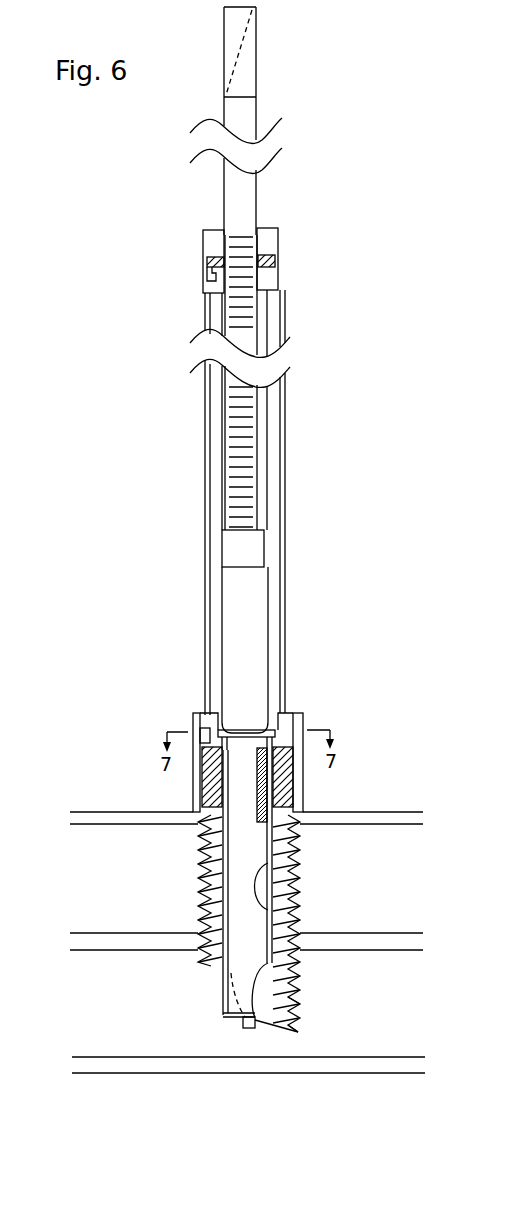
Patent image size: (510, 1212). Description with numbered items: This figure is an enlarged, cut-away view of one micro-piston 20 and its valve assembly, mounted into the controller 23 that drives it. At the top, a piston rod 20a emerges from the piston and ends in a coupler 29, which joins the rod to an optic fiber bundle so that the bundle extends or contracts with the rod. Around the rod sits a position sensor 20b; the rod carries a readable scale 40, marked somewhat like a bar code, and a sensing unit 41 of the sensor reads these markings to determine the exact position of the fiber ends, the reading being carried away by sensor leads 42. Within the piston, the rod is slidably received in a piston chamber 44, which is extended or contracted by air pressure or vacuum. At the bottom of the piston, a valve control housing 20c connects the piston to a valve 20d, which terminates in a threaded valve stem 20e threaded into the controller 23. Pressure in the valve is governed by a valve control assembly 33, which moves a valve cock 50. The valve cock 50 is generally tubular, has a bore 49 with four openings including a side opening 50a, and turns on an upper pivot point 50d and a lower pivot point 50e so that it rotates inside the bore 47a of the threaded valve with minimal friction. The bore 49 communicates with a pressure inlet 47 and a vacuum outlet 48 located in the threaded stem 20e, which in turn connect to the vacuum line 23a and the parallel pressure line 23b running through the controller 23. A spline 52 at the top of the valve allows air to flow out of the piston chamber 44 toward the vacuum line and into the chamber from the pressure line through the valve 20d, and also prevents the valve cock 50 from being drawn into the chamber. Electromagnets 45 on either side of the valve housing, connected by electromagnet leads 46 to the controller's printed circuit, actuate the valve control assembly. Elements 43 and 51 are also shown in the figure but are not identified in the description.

The coupler 29 is at (255, 62).
The piston rod 20a is at (256, 212).
The sensor leads 42 is at (207, 260).
The sensing unit 41 is at (207, 277).
The position sensor 20b is at (278, 277).
The readable scale 40 is at (227, 422).
The nut block 43 is at (223, 553).
The micro-piston 20 is at (210, 612).
The piston chamber 44 is at (252, 622).
The spline 52 is at (247, 735).
The upper pivot point 50d is at (247, 735).
The electromagnet leads 46 is at (203, 733).
The valve control housing 20c is at (305, 720).
The valve control assembly 33 is at (353, 745).
The controller 23 is at (122, 802).
The electromagnets 45 is at (290, 796).
The seal 51 is at (257, 813).
The vacuum line 23a is at (146, 892).
The pressure line 23b is at (146, 1004).
The pressure inlet 47 is at (303, 877).
The side opening 50a is at (265, 913).
The valve 20d is at (322, 980).
The bore 49 is at (249, 932).
The valve cock 50 is at (234, 1013).
The vacuum outlet 48 is at (245, 1025).
The lower pivot point 50e is at (250, 1023).
The threaded valve stem 20e is at (262, 1022).
The bore of threaded valve 47a is at (268, 998).